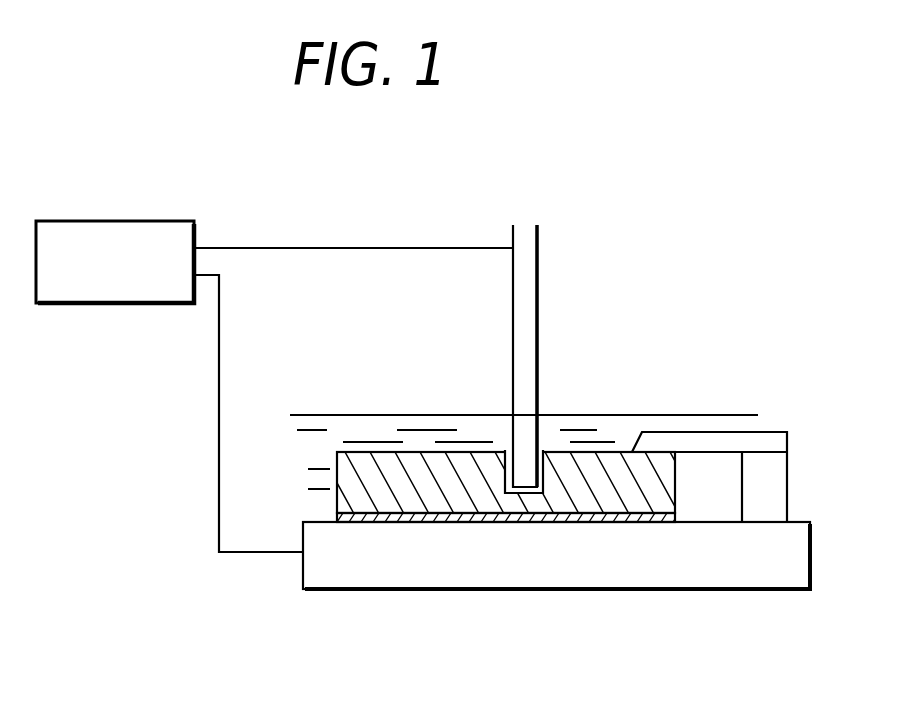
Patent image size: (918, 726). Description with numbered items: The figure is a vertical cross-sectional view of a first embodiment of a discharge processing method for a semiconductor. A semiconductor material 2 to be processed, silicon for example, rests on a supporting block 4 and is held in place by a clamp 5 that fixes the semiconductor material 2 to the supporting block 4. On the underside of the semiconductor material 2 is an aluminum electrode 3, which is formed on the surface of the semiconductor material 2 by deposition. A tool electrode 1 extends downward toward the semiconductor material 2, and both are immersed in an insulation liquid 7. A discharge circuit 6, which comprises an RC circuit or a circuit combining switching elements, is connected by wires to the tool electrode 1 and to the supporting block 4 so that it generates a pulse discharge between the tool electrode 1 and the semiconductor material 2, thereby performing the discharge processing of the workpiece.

The tool electrode 1 is at (537, 238).
The semiconductor material 2 is at (605, 452).
The aluminum electrode 3 is at (622, 522).
The supporting block 4 is at (350, 589).
The clamp 5 is at (787, 444).
The discharge circuit 6 is at (145, 218).
The insulation liquid 7 is at (578, 425).